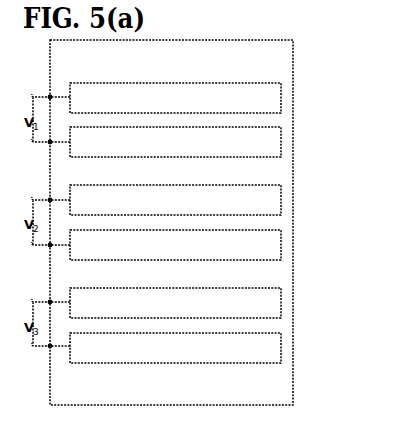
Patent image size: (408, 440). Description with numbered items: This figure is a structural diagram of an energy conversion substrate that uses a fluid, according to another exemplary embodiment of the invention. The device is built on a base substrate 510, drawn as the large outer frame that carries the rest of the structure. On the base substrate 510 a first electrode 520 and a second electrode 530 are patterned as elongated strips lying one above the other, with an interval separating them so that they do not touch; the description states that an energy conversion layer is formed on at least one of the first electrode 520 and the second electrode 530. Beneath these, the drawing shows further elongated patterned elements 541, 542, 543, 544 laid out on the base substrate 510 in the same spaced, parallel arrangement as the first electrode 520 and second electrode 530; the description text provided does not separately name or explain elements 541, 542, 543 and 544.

The base substrate 510 is at (293, 53).
The first electrode 520 is at (281, 98).
The second electrode 530 is at (281, 147).
The first auxiliary electrode 541 is at (281, 200).
The second auxiliary electrode 542 is at (281, 251).
The third auxiliary electrode 543 is at (281, 302).
The fourth auxiliary electrode 544 is at (281, 350).